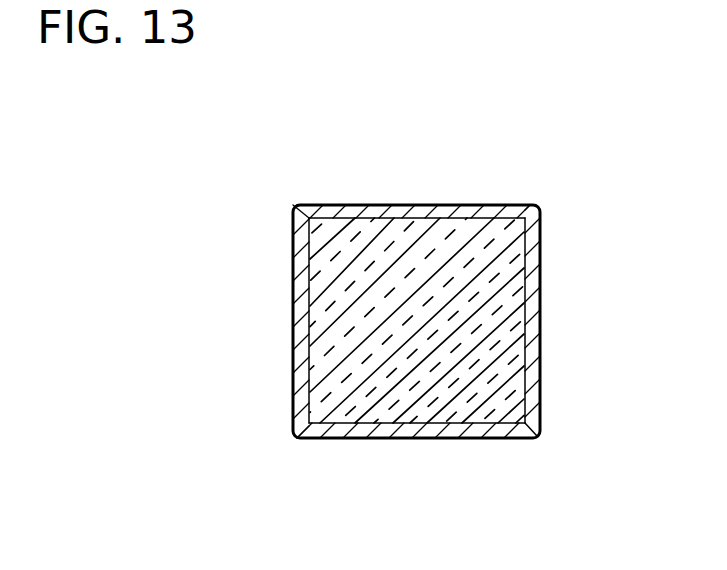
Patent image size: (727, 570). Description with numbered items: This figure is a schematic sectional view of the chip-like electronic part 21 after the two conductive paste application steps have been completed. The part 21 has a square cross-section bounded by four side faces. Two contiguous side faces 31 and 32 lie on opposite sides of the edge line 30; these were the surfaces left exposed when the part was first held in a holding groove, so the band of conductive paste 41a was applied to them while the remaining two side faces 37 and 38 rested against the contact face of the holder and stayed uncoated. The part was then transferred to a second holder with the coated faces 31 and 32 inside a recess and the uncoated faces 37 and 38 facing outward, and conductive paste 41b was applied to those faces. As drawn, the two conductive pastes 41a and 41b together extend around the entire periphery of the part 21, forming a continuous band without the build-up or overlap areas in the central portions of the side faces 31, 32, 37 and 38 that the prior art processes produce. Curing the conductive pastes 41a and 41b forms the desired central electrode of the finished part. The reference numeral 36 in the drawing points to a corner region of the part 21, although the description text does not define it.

The chip-like electronic part 21 is at (278, 168).
The edge line 30 is at (298, 210).
The side face 31 is at (415, 218).
The side face 32 is at (309, 337).
The corner of sheath 36 is at (533, 437).
The side face 37 is at (406, 424).
The side face 38 is at (527, 280).
The conductive paste 41a is at (293, 286).
The conductive paste 41b is at (540, 320).